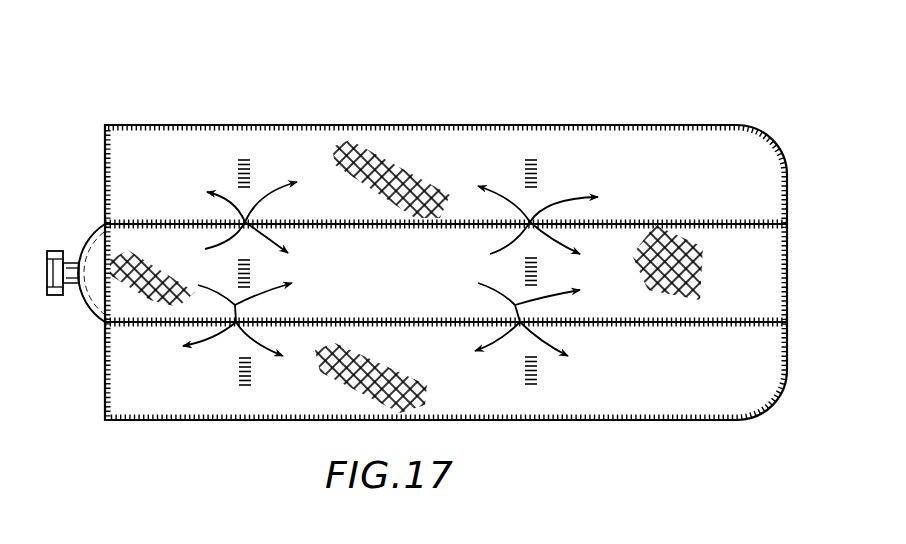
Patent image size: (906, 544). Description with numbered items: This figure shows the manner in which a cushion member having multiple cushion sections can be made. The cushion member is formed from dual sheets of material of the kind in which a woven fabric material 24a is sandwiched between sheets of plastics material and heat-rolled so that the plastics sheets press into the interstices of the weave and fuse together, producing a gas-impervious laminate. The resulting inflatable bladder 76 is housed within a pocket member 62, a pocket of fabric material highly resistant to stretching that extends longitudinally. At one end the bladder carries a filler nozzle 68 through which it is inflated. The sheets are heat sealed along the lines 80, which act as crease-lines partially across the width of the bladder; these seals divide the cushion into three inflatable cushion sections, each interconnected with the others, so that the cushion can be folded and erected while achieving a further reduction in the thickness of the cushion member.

The pocket member 62 is at (263, 393).
The woven fabric material 24a is at (488, 388).
The filler nozzle 68 is at (55, 296).
The inflatable bladder 76 is at (98, 326).
The heat seal lines 80 is at (237, 172).